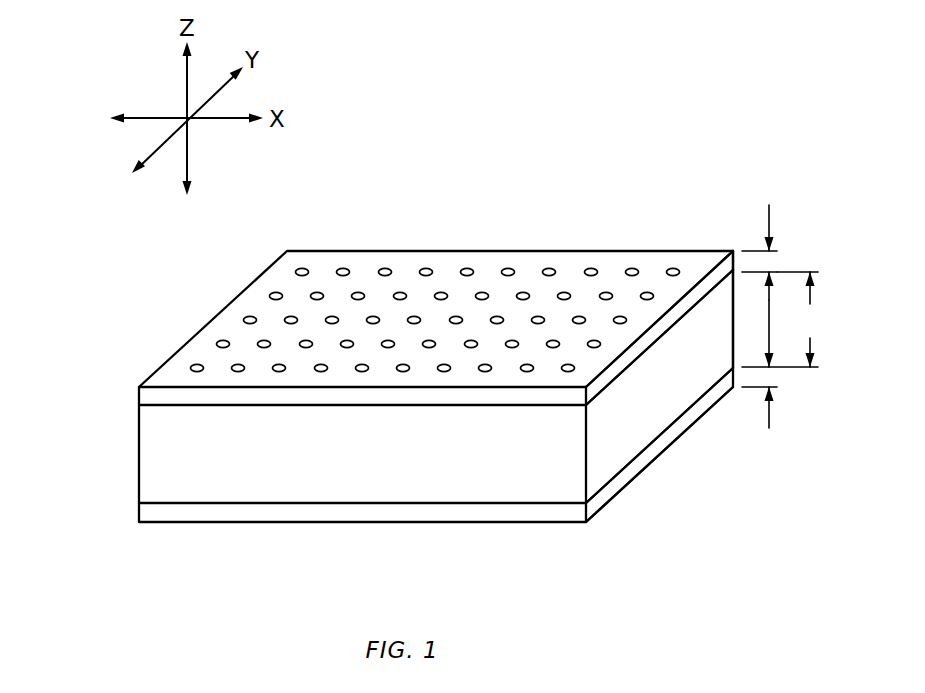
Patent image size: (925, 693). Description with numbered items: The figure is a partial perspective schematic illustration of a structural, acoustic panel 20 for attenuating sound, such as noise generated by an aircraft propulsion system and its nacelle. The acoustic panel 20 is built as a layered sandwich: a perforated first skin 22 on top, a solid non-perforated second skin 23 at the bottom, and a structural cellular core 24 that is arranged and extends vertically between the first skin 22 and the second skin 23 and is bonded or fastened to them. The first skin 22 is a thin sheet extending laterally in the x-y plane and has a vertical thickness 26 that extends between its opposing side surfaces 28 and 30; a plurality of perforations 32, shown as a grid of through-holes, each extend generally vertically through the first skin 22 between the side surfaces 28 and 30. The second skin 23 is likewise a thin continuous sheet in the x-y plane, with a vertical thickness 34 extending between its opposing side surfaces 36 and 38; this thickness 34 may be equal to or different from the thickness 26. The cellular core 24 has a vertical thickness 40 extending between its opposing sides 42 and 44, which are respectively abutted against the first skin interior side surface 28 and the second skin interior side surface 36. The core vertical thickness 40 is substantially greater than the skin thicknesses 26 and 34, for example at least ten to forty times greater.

The acoustic panel 20 is at (585, 175).
The first skin 22 is at (131, 396).
The second skin 23 is at (131, 512).
The cellular core 24 is at (127, 410).
The first skin vertical thickness 26 is at (770, 217).
The first skin interior side surface 28 is at (702, 300).
The first skin side surface 30 is at (698, 317).
The perforations 32 is at (402, 292).
The second skin vertical thickness 34 is at (769, 420).
The second skin interior side surface 36 is at (688, 400).
The second skin side surface 38 is at (668, 455).
The core vertical thickness 40 is at (783, 319).
The core side 42 is at (658, 337).
The core side 44 is at (627, 470).